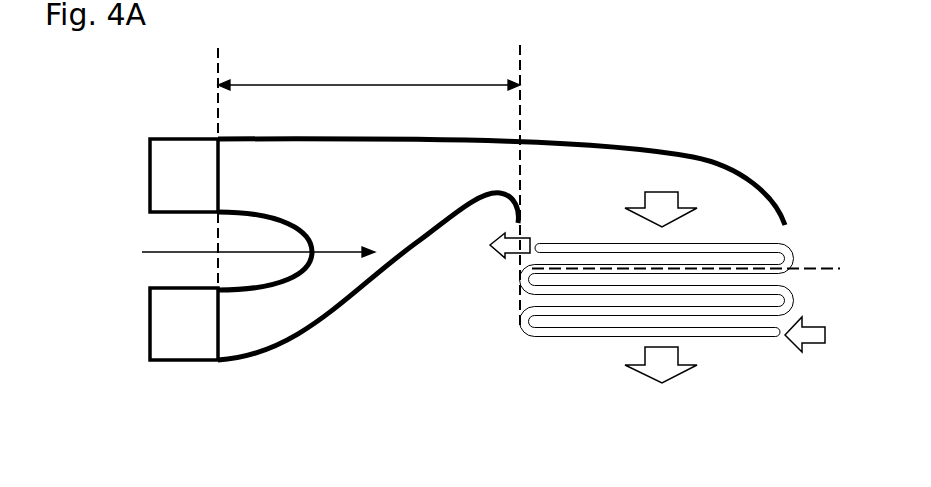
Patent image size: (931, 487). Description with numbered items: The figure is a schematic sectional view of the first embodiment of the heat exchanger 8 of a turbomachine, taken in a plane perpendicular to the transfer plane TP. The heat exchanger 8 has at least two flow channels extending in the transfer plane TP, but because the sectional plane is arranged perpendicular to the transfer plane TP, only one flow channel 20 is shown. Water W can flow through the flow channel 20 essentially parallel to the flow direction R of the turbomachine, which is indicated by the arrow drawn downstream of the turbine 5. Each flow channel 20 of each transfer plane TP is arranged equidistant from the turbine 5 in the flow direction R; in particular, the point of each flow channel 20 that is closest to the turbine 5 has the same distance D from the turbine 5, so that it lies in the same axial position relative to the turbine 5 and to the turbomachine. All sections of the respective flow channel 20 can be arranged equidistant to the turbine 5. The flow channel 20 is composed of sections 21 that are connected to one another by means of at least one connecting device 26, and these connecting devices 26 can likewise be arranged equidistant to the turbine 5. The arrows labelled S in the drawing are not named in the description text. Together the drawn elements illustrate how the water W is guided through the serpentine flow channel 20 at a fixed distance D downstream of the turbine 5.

The turbine 5 is at (190, 152).
The heat exchanger 8 is at (646, 87).
The flow channel 20 is at (598, 378).
The section 21 is at (568, 333).
The connecting device 26 is at (525, 335).
The distance D is at (369, 185).
The flow direction R is at (247, 252).
The surface direction S is at (665, 202).
The transfer plane TP is at (815, 270).
The water W is at (502, 258).